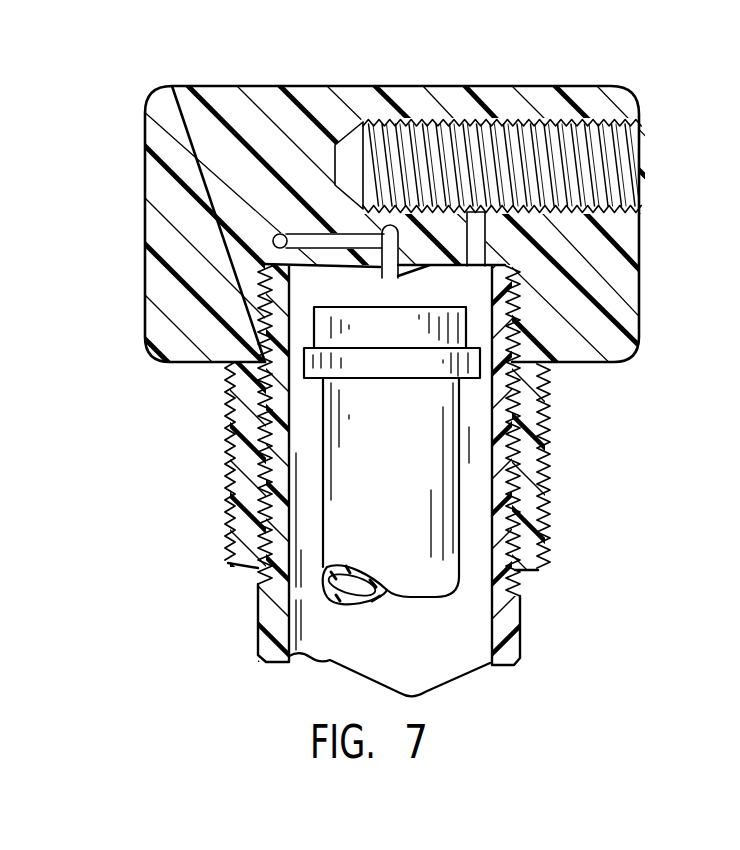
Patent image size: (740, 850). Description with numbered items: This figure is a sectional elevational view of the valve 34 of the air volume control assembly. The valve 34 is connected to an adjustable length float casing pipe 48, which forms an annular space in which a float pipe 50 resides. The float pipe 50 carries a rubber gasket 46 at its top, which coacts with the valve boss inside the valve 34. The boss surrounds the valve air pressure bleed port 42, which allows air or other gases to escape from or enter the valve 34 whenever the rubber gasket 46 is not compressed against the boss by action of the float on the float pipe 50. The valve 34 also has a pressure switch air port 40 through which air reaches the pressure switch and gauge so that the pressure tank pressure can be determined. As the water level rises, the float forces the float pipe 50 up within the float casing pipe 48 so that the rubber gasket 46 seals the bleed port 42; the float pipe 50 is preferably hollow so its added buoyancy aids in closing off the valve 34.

The valve 34 is at (160, 88).
The pressure switch air port 40 is at (487, 230).
The valve air pressure bleed port 42 is at (313, 242).
The rubber gasket 46 is at (340, 322).
The float casing pipe 48 is at (522, 625).
The float pipe 50 is at (323, 585).